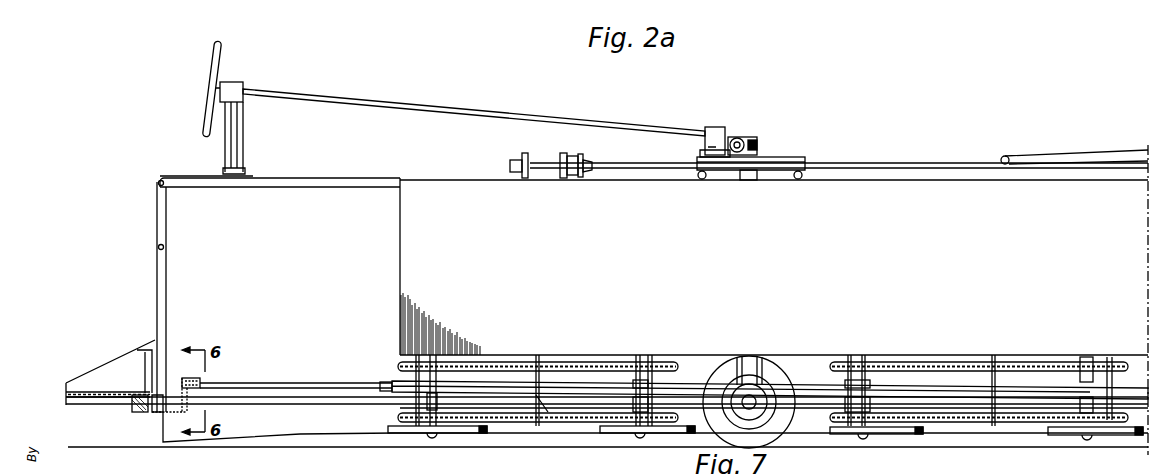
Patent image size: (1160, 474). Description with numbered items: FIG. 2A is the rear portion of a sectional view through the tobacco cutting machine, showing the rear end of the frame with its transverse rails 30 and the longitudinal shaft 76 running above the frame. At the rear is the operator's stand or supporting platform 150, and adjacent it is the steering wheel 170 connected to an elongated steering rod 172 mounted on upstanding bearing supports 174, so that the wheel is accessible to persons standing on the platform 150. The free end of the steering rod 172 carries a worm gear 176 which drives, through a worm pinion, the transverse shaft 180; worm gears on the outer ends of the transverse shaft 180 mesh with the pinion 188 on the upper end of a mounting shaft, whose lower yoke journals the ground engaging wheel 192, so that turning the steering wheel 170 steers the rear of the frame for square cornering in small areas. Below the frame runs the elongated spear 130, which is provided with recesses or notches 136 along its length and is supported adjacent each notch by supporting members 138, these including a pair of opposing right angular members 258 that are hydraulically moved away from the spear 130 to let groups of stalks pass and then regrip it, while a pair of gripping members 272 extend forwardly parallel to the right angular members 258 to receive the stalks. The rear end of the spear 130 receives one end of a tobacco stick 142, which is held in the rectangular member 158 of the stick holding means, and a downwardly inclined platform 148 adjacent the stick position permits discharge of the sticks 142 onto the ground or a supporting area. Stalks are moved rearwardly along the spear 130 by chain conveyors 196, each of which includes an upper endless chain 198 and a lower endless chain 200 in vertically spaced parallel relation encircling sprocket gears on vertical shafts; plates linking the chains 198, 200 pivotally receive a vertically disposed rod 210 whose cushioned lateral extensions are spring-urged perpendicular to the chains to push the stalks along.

The steering wheel 170 is at (212, 64).
The upstanding bearing supports 174 is at (238, 92).
The steering rod 172 is at (522, 119).
The worm gear 176 is at (753, 135).
The transverse shaft 180 is at (740, 138).
The pinion 188 is at (757, 147).
The transverse rails 30 is at (800, 171).
The longitudinal shaft 76 is at (916, 163).
The operator's stand or supporting platform 150 is at (82, 390).
The rectangular member 158 is at (178, 378).
The tobacco stick 142 is at (286, 387).
The downwardly inclined platform 148 is at (287, 423).
The elongated spear 130 is at (490, 386).
The endless chain 198 is at (460, 363).
The chain conveyors 196 is at (935, 364).
The supporting members 138 is at (628, 382).
The recesses or notches 136 is at (652, 362).
The right angular members 258 is at (863, 384).
The ground engaging wheel 192 is at (777, 367).
The vertically disposed rod 210 is at (545, 407).
The endless chain 200 is at (498, 421).
The gripping members 272 is at (675, 428).